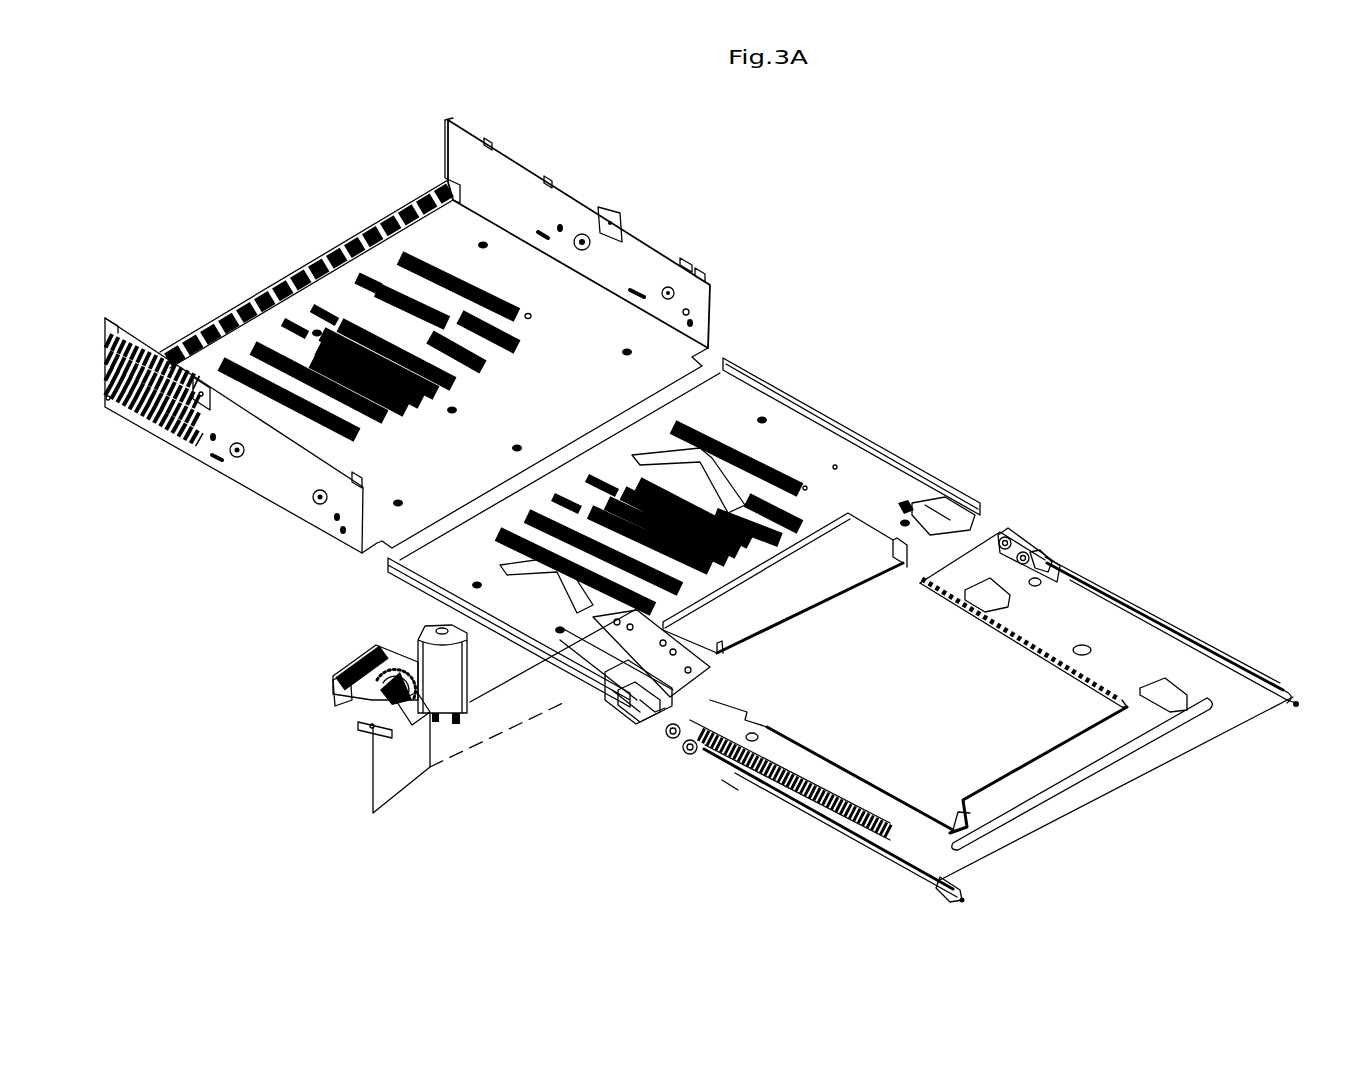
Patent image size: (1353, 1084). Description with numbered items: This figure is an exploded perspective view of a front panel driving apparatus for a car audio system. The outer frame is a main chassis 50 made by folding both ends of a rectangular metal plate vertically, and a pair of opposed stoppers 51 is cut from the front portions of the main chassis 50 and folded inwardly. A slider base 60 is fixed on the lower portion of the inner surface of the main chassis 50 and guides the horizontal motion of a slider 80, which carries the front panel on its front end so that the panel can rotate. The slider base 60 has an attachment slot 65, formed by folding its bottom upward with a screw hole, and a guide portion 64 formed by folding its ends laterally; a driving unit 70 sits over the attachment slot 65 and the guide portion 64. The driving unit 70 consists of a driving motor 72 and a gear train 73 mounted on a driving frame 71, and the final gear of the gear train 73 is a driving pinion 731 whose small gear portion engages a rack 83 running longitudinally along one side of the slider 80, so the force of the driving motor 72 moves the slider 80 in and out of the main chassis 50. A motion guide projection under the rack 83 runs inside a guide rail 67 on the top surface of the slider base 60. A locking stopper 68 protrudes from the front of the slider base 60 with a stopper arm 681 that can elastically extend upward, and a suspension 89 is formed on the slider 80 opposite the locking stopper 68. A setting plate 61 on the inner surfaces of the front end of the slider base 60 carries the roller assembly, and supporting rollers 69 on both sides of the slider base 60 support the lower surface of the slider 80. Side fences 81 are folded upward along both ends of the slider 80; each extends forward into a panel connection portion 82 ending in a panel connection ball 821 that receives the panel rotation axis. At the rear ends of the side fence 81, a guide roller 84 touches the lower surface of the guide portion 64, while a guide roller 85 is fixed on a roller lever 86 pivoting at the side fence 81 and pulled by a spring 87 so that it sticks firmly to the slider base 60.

The main chassis 50 is at (423, 335).
The stopper 51 is at (689, 313).
The slider base 60 is at (688, 535).
The guide portion 64 is at (772, 392).
The stopper arm 681 is at (901, 504).
The supporting roller 69 is at (982, 514).
The locking stopper 68 is at (982, 531).
The guide roller 84 is at (1010, 542).
The roller lever 86 is at (1030, 556).
The spring 87 is at (1055, 576).
The slider 80 is at (969, 727).
The side fence 81 is at (1197, 638).
The panel connection portion 82 is at (1293, 698).
The panel connection ball 821 is at (1293, 705).
The suspension 89 is at (968, 612).
The guide roller 85 is at (1034, 584).
The rack 83 is at (813, 808).
The driving unit 70 is at (440, 705).
The driving motor 72 is at (446, 677).
The gear train 73 is at (360, 664).
The driving pinion 731 is at (345, 669).
The driving frame 71 is at (398, 716).
The attachment slot 65 is at (583, 668).
The setting plate 61 is at (627, 712).
The guide rail 67 is at (655, 713).